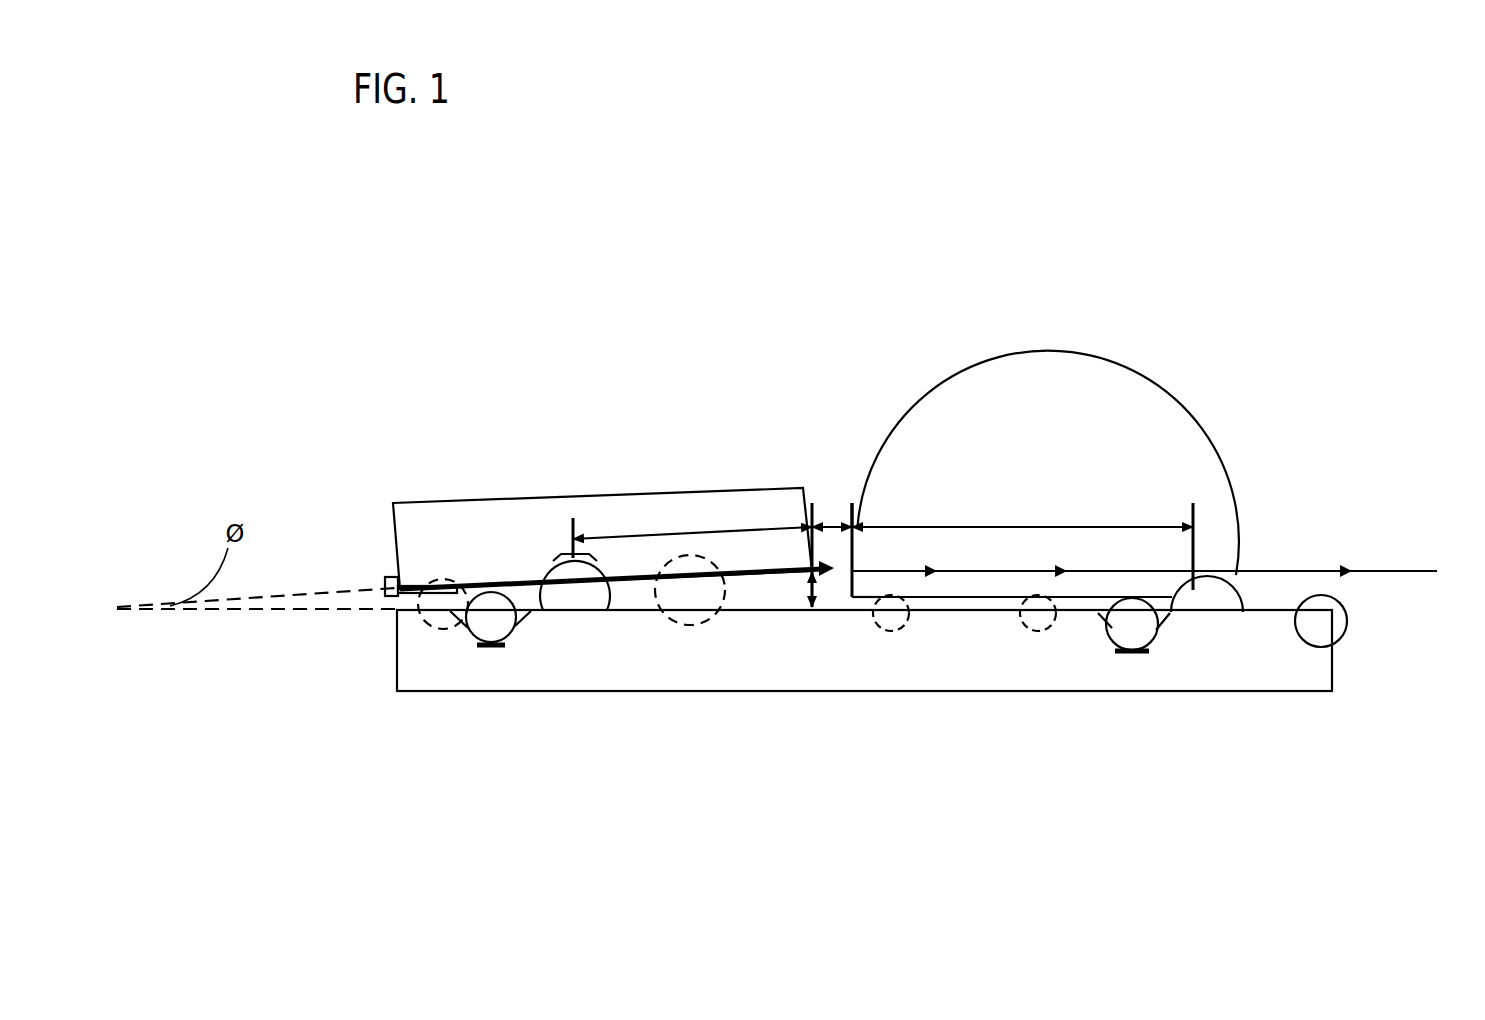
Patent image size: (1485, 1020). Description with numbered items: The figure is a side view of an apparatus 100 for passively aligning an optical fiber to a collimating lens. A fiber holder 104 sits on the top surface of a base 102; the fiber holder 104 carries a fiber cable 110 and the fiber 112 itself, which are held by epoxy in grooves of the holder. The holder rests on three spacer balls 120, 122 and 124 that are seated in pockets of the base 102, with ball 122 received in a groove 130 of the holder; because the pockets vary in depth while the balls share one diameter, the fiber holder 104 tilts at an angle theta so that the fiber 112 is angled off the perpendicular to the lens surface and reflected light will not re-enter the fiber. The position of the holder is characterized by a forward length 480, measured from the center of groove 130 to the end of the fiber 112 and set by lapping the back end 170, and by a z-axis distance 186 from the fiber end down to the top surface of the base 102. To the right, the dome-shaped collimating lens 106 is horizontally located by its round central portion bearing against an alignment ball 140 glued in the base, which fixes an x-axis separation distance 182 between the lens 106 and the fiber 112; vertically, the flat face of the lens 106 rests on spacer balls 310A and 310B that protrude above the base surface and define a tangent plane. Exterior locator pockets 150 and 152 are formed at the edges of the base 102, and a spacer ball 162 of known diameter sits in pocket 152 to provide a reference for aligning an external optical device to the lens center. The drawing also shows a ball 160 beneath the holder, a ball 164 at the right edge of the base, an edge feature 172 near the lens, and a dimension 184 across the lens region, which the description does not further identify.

The apparatus 100 is at (852, 305).
The base 102 is at (1297, 692).
The fiber holder 104 is at (467, 502).
The collimating lens 106 is at (1175, 408).
The fiber cable 110 is at (386, 576).
The fiber 112 is at (782, 573).
The spacer ball 120 is at (418, 597).
The spacer ball 122 is at (612, 613).
The spacer ball 124 is at (650, 617).
The groove 130 is at (571, 577).
The alignment ball 140 is at (1247, 598).
The exterior locator pocket 150 is at (520, 625).
The exterior locator pocket 152 is at (1160, 624).
The solder ball 160 is at (493, 622).
The spacer ball 162 is at (1133, 632).
The solder ball 164 is at (1340, 627).
The back end 170 is at (813, 500).
The edge of second chip 172 is at (853, 598).
The x-axis separation distance 182 is at (835, 522).
The chip length dimension 184 is at (1012, 527).
The z-axis distance 186 is at (808, 607).
The spacer ball 310A is at (896, 626).
The spacer ball 310B is at (1040, 629).
The forward length 480 is at (687, 532).